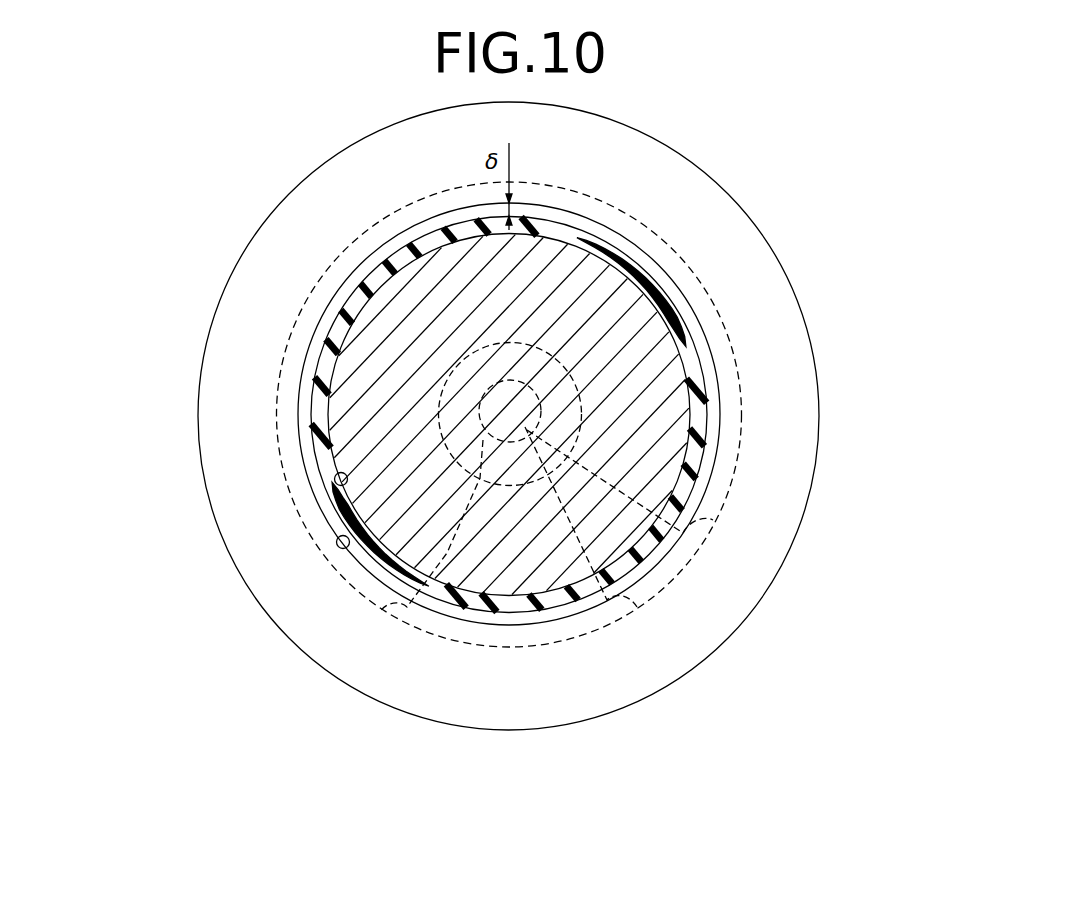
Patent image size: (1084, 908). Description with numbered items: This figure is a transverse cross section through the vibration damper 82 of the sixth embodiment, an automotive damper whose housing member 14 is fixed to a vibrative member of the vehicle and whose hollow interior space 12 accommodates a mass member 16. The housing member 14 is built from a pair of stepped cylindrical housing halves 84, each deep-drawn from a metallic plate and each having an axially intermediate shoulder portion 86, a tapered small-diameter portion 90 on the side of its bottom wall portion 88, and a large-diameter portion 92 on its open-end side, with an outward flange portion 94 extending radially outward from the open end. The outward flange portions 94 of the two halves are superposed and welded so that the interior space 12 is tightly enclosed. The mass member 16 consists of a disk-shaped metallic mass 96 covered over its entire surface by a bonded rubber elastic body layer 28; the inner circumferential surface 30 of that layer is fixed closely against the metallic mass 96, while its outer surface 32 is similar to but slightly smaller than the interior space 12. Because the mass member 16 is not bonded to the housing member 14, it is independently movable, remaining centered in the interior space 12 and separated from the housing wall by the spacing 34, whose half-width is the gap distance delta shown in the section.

The interior space 12 is at (670, 287).
The housing member 14 is at (258, 232).
The mass member 16 is at (393, 247).
The rubber elastic body layer 28 is at (700, 417).
The inner circumferential surface 30 is at (327, 503).
The outer surface 32 is at (310, 410).
The spacing 34 is at (600, 232).
The vibration damper 82 is at (741, 170).
The housing half 84 is at (493, 416).
The shoulder portion 86 is at (380, 612).
The bottom wall portion 88 is at (713, 520).
The tapered small-diameter portion 90 is at (637, 607).
The large-diameter portion 92 is at (347, 553).
The outward flange portion 94 is at (787, 490).
The metallic mass 96 is at (668, 353).